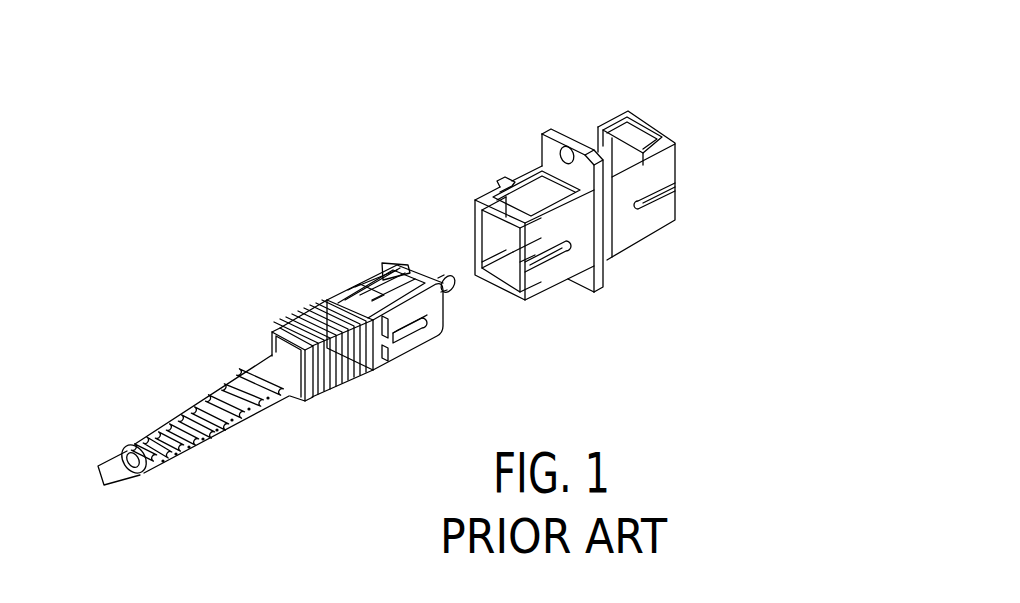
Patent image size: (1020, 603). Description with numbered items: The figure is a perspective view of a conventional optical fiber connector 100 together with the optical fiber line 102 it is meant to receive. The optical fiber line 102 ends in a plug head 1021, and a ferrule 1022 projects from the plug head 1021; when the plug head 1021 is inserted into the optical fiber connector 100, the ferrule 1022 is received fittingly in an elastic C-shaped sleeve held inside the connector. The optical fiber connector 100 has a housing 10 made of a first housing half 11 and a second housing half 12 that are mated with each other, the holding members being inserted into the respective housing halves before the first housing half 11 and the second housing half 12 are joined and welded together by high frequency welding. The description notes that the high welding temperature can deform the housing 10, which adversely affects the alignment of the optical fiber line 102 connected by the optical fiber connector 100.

The optical fiber connector 100 is at (587, 122).
The housing 10 is at (543, 128).
The first housing half 11 is at (557, 280).
The second housing half 12 is at (662, 219).
The optical fiber line 102 is at (327, 292).
The plug head 1021 is at (402, 350).
The ferrule 1022 is at (462, 291).